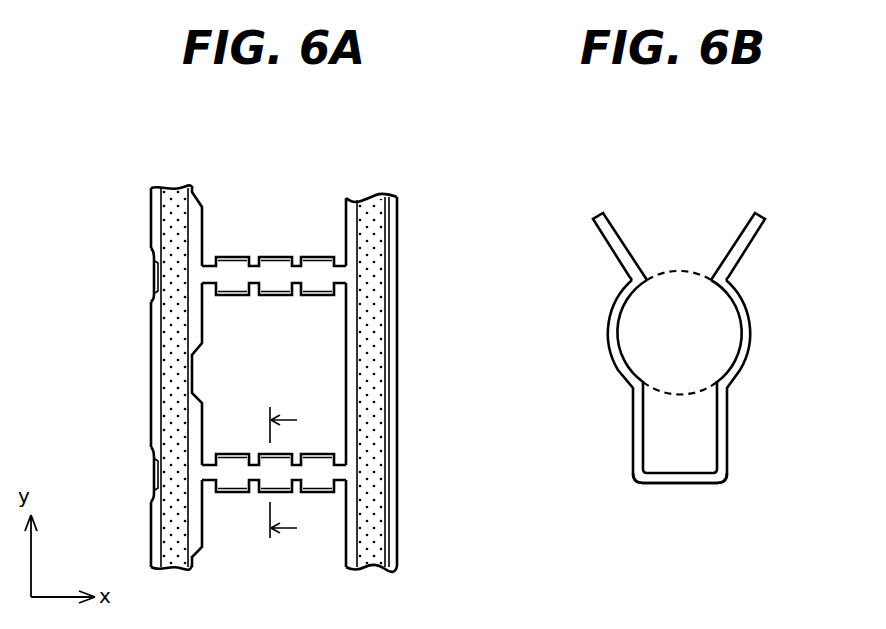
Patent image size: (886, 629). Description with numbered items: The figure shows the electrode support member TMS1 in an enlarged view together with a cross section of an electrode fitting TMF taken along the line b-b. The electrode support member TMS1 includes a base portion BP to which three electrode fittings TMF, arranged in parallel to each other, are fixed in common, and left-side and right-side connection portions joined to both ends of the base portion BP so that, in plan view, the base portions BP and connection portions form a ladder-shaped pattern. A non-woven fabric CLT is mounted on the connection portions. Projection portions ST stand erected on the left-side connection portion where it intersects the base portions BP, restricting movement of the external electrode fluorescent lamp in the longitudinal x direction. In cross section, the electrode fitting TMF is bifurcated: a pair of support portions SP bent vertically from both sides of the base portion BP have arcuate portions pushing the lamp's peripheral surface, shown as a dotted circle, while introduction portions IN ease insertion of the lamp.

In FIG. 6A, the electrode support member TMS1 is at (148, 178).
In FIG. 6A, the electrode fitting TMF is at (224, 256).
In FIG. 6B, the electrode fitting TMF is at (694, 222).
In FIG. 6A, the base portion BP is at (330, 275).
In FIG. 6B, the base portion BP is at (678, 486).
In FIG. 6A, the non-woven fabric CLT is at (177, 348).
In FIG. 6A, the projection portion ST is at (151, 280).
In FIG. 6B, the introduction portion IN is at (600, 212).
In FIG. 6B, the support portion SP is at (752, 316).
In FIG. 6A, the line b- b is at (294, 474).